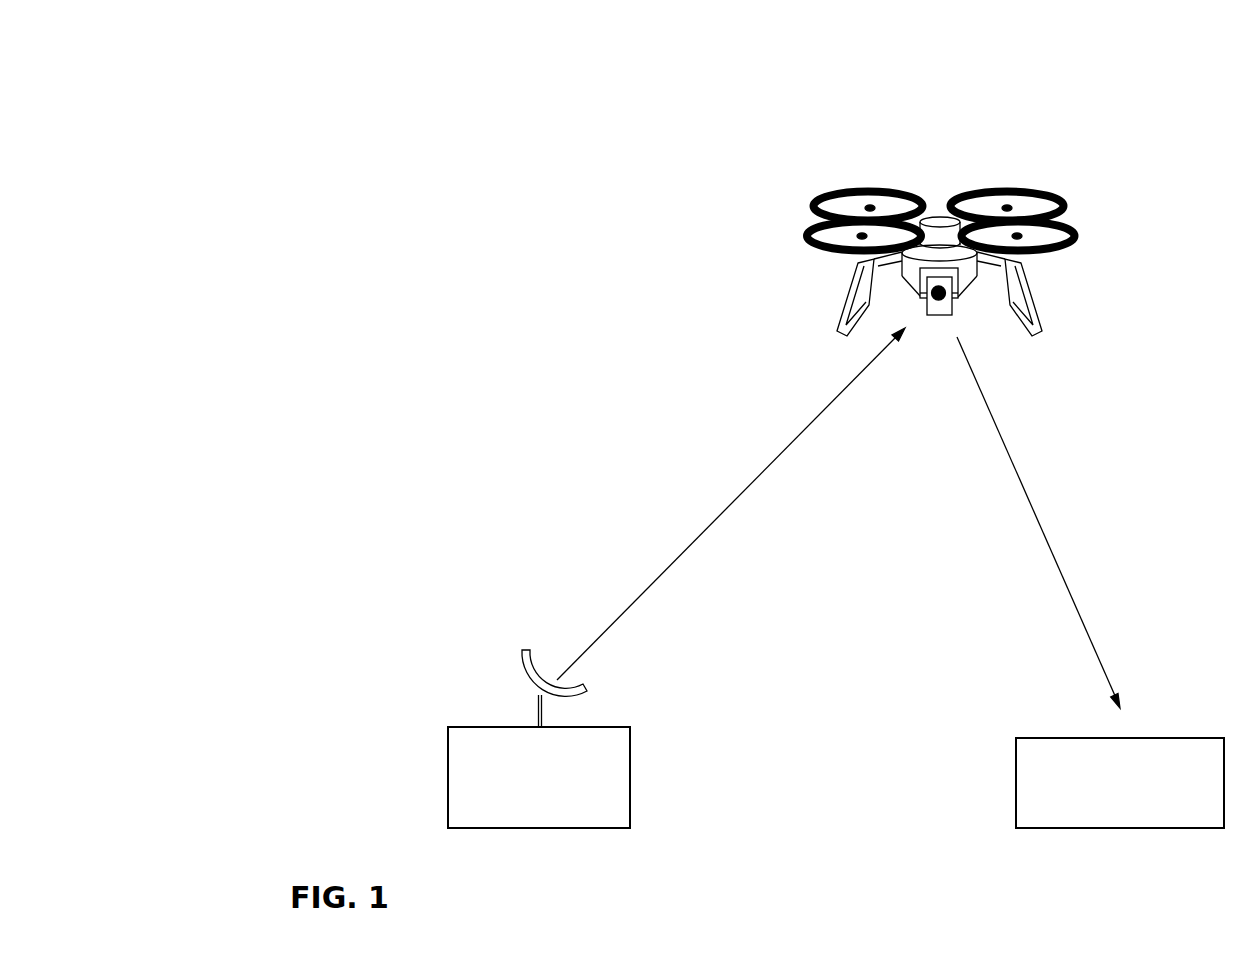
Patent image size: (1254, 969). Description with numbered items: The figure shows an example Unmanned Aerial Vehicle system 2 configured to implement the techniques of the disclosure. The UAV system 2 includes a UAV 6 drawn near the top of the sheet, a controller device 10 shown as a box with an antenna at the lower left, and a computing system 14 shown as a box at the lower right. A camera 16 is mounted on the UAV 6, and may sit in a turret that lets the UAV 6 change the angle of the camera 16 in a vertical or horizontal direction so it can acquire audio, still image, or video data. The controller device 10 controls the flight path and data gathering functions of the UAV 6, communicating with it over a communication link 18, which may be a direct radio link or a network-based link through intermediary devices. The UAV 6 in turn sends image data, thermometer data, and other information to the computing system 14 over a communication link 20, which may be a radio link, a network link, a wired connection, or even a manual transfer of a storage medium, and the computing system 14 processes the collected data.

The UAV system 2 is at (385, 48).
The UAV 6 is at (997, 224).
The controller device 10 is at (528, 811).
The computing system 14 is at (1112, 817).
The camera 16 is at (950, 307).
The communication link 18 is at (695, 545).
The communication link 20 is at (1047, 543).